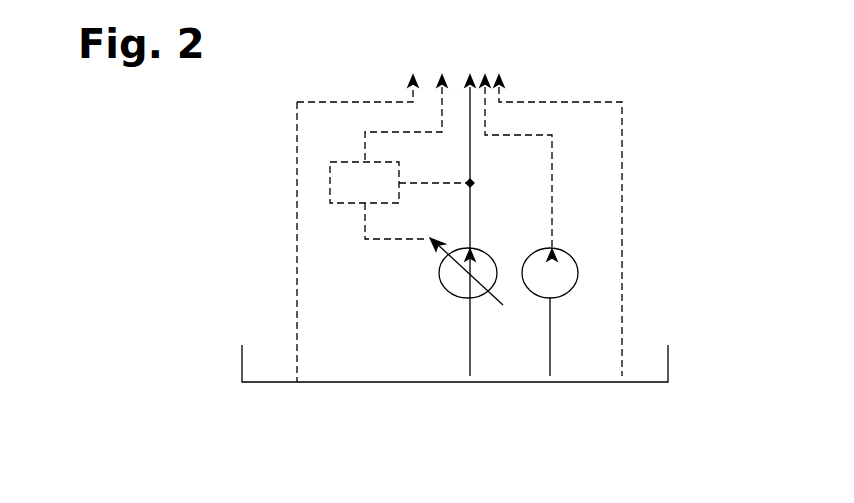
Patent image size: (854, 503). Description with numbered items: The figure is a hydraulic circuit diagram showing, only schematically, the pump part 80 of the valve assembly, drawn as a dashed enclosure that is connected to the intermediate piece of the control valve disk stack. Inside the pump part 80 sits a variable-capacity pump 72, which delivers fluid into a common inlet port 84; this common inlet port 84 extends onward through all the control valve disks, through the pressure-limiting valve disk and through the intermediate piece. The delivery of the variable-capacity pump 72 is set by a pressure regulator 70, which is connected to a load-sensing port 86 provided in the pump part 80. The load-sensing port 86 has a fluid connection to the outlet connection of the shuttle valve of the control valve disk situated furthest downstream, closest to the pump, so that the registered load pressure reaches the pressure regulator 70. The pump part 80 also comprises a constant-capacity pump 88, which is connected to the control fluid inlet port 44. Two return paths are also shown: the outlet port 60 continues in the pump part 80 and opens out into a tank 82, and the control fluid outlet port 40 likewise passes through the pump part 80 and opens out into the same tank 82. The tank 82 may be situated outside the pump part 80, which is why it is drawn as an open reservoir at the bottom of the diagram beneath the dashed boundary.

The pump part 80 is at (749, 83).
The tank 82 is at (272, 385).
The outlet port 60 is at (296, 241).
The control fluid outlet port 40 is at (622, 203).
The load-sensing port 86 is at (380, 132).
The pressure regulator 70 is at (343, 180).
The common inlet port 84 is at (469, 100).
The control fluid inlet port 44 is at (553, 146).
The variable-capacity pump 72 is at (451, 299).
The constant-capacity pump 88 is at (578, 275).